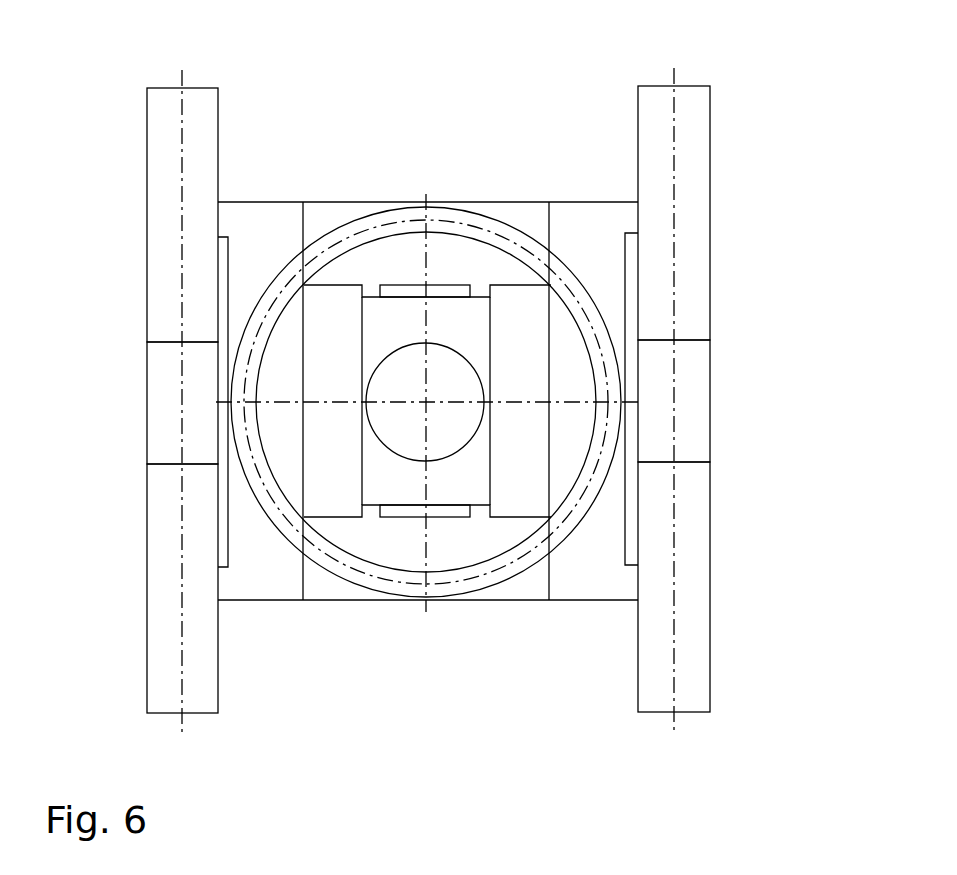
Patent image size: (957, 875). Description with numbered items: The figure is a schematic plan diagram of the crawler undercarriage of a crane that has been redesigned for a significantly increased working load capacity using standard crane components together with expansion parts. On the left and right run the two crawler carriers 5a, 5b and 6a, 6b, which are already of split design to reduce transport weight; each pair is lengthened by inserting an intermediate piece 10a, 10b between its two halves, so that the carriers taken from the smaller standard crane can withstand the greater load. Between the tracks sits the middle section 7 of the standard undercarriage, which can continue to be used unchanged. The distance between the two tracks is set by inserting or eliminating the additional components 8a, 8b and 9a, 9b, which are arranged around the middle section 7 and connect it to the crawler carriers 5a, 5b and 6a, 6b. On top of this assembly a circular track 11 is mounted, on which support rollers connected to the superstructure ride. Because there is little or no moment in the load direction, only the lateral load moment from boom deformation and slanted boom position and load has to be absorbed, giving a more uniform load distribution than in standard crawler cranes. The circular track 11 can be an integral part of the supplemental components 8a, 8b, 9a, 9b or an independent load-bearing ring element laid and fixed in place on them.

The crawler carrier 5a is at (156, 145).
The crawler carrier 5b is at (152, 620).
The crawler carrier 6a is at (697, 137).
The crawler carrier 6b is at (697, 614).
The intermediate piece 10a is at (154, 428).
The intermediate piece 10b is at (697, 390).
The middle section 7 is at (400, 335).
The additional component 8a is at (275, 590).
The additional component 8b is at (582, 590).
The additional component 9a is at (355, 590).
The additional component 9b is at (331, 218).
The circular track 11 is at (477, 225).